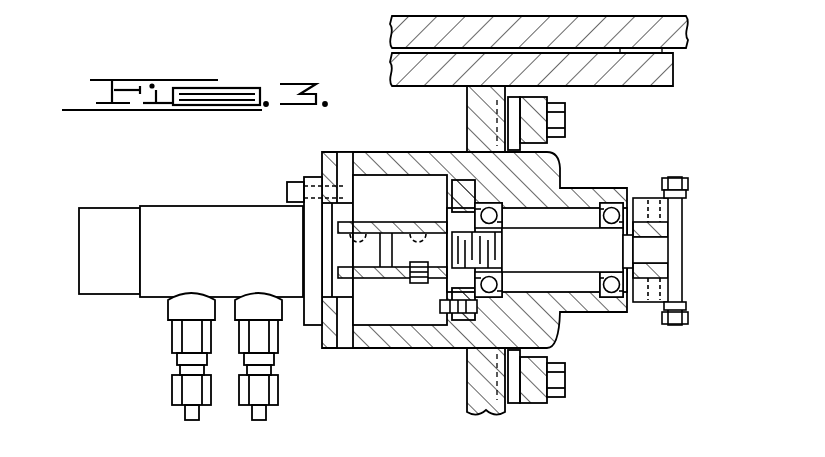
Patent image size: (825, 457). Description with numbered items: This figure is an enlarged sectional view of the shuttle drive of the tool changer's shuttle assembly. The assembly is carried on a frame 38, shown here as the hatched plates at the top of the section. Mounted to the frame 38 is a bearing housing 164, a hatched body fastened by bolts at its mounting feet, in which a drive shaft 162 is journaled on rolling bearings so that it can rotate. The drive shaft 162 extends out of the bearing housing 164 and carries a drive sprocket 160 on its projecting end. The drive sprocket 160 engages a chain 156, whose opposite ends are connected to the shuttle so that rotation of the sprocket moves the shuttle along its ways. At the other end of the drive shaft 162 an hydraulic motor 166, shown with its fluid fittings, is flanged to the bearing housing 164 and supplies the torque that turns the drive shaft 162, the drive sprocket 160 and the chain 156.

The frame 38 is at (662, 68).
The chain 156 is at (684, 206).
The drive sprocket 160 is at (684, 268).
The drive shaft 162 is at (582, 262).
The bearing housing 164 is at (540, 162).
The hydraulic motor 166 is at (197, 218).